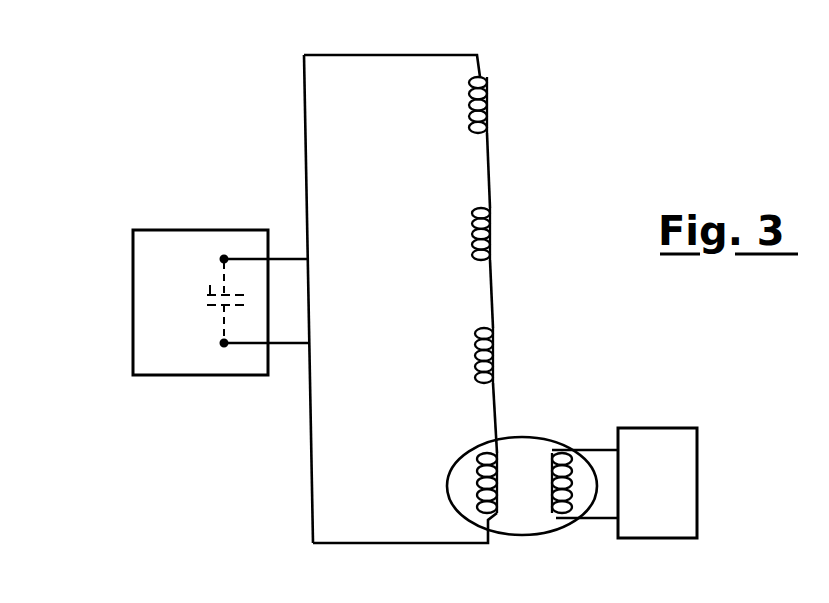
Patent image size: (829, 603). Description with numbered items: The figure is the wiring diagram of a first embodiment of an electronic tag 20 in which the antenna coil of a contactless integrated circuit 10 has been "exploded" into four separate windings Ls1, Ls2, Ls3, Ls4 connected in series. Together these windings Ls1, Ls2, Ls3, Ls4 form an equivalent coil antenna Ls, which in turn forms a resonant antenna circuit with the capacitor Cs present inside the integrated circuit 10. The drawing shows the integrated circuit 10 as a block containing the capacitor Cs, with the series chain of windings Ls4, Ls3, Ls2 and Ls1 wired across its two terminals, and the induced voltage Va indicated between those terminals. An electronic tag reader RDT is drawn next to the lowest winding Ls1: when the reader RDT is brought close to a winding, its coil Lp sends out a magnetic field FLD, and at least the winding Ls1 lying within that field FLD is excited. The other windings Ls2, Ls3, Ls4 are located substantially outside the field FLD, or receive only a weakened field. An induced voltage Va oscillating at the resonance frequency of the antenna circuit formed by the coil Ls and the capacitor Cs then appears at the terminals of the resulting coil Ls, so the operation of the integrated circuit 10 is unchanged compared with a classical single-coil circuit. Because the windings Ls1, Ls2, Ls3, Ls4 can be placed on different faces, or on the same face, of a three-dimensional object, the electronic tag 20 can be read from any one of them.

The electronic tag 20 is at (134, 101).
The contactless integrated circuit 10 is at (150, 275).
The capacitor Cs is at (213, 285).
The induced voltage Va is at (293, 278).
The coil antenna Ls is at (443, 55).
The winding Ls4 is at (471, 128).
The winding Ls3 is at (473, 236).
The winding Ls2 is at (476, 367).
The winding Ls1 is at (478, 480).
The magnetic field FLD is at (545, 438).
The reader coil Lp is at (560, 510).
The electronic tag reader RDT is at (687, 495).